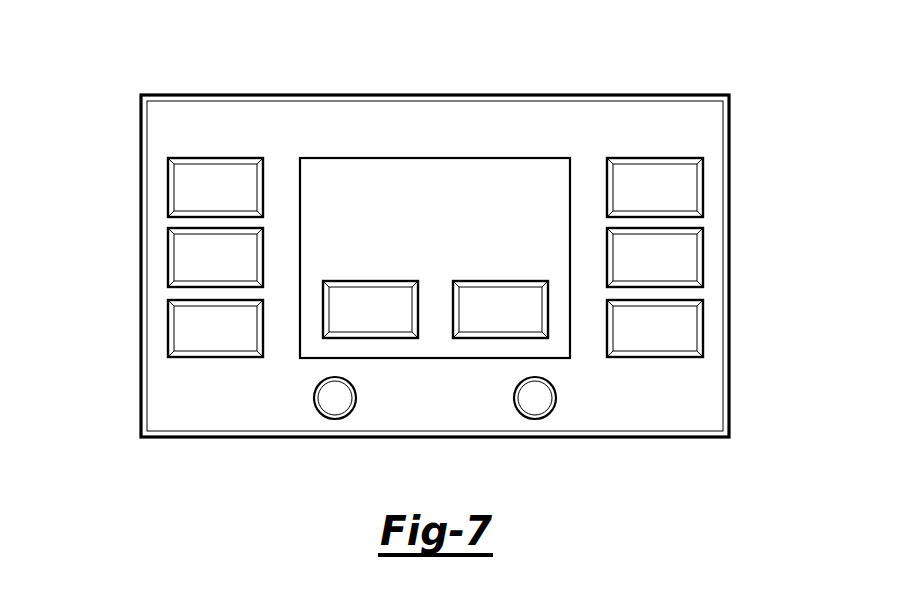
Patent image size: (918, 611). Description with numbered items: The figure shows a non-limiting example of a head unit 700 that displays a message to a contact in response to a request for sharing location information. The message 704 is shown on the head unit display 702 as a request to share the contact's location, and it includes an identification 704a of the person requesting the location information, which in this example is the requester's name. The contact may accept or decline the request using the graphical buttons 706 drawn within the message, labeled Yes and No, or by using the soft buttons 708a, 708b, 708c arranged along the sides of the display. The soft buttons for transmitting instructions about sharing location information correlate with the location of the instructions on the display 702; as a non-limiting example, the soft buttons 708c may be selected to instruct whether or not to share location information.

The head unit 700 is at (122, 78).
The head unit display 702 is at (300, 357).
The message 704 is at (322, 172).
The identification 704a is at (360, 172).
The graphical buttons 706 is at (370, 338).
The soft button 708a is at (168, 188).
The soft button 708b is at (168, 258).
The soft buttons 708c is at (168, 330).